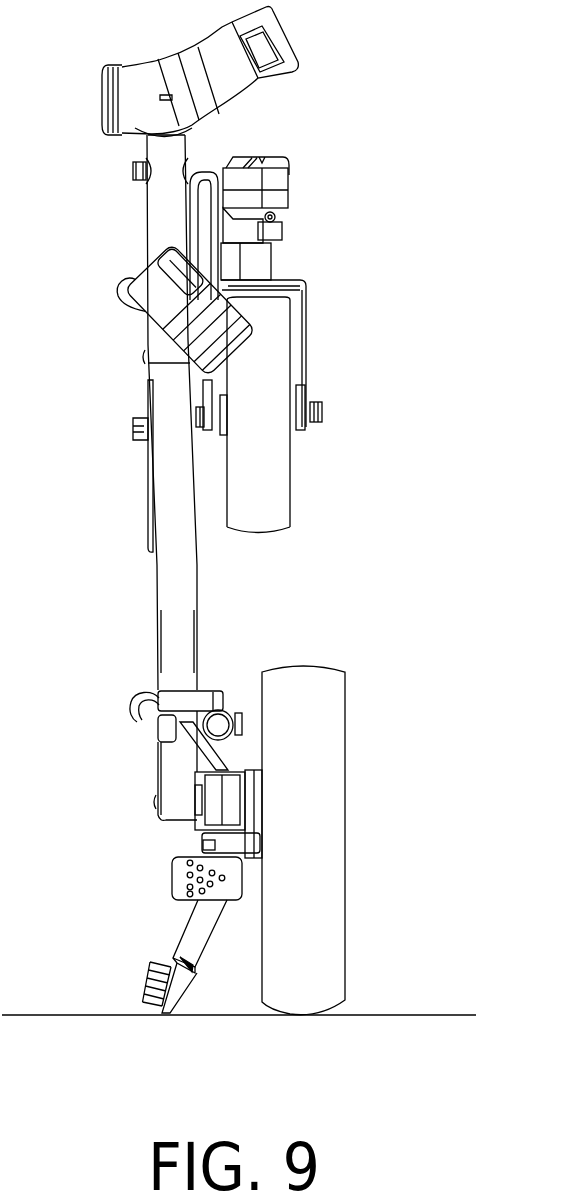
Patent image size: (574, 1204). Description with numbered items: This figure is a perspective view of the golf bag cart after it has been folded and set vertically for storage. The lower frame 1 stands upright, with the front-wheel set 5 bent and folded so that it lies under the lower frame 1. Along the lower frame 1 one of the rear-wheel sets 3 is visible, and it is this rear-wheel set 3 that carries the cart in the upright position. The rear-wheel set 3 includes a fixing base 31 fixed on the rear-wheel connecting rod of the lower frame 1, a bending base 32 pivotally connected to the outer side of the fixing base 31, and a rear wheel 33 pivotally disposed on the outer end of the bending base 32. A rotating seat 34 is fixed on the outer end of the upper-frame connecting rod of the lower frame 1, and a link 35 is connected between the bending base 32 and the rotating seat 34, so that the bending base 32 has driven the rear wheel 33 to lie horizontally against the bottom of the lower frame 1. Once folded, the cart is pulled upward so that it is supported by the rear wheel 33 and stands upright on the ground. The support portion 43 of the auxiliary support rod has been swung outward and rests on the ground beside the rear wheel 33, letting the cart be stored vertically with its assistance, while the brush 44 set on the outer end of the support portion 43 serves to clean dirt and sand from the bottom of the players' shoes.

The lower frame 1 is at (180, 572).
The rear-wheel set 3 is at (355, 650).
The front-wheel set 5 is at (258, 267).
The fixing base 31 is at (195, 805).
The bending base 32 is at (247, 797).
The rear wheel 33 is at (320, 845).
The rotating seat 34 is at (163, 727).
The link 35 is at (195, 750).
The support portion 43 is at (198, 930).
The brush 44 is at (150, 992).